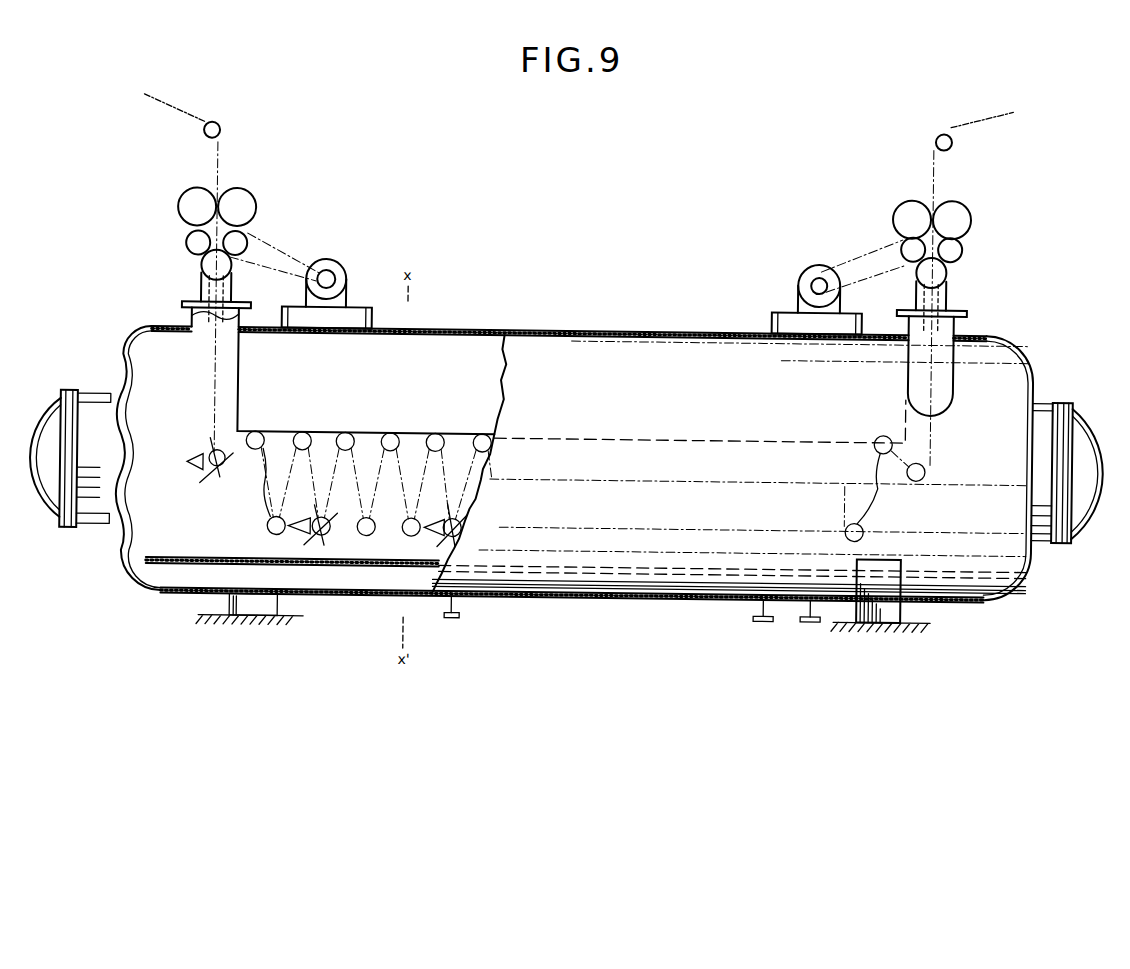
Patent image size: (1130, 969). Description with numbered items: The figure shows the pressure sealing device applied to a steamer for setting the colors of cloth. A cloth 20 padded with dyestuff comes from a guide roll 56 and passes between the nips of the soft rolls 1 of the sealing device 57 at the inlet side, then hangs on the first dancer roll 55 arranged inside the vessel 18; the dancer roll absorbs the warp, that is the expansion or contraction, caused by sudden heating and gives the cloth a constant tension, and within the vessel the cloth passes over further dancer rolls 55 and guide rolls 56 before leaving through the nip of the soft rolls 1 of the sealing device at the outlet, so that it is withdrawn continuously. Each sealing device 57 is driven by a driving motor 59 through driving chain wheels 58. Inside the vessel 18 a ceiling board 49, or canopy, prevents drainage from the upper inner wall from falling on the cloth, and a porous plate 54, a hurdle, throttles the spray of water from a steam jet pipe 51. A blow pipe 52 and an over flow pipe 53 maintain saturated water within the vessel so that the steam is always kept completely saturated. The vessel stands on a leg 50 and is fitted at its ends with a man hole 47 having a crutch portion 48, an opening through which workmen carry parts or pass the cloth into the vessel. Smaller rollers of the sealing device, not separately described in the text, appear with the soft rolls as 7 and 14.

The soft rolls 1 is at (181, 198).
The roller 7 is at (187, 239).
The roller 14 is at (199, 270).
The vessel 18 is at (592, 600).
The cloth 20 is at (178, 109).
The man hole 47 is at (50, 404).
The crutch portion of the man hole 48 is at (68, 394).
The ceiling board 49 is at (445, 330).
The leg 50 is at (905, 606).
The steam jet pipe 51 is at (461, 617).
The blow pipe 52 is at (757, 618).
The over flow pipe 53 is at (809, 616).
The porous plate 54 is at (167, 571).
The dancer roll 55 is at (444, 540).
The guide roll 56 is at (216, 130).
The sealing device 57 is at (250, 240).
The driving chain wheels 58 is at (325, 273).
The driving motor 59 is at (337, 267).